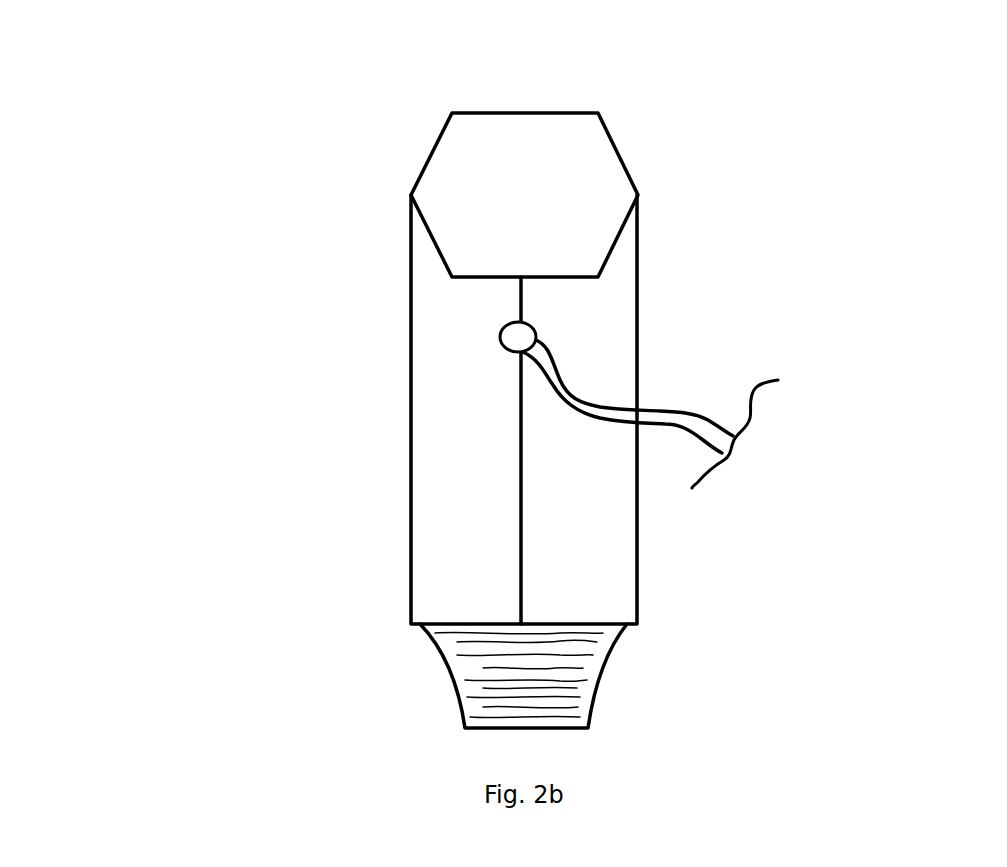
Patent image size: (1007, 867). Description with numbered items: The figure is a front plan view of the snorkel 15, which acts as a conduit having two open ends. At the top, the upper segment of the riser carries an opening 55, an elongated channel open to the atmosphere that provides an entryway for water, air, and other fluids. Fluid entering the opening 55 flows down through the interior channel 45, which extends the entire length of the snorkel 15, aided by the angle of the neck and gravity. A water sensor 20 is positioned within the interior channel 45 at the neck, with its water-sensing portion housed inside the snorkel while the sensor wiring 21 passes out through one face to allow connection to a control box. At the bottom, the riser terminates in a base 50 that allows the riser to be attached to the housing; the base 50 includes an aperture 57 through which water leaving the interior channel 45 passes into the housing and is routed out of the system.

The snorkel 15 is at (216, 76).
The water sensor 20 is at (518, 341).
The sensor wiring 21 is at (675, 417).
The interior channel 45 is at (597, 163).
The base 50 is at (478, 682).
The opening 55 is at (478, 168).
The aperture 57 is at (550, 732).